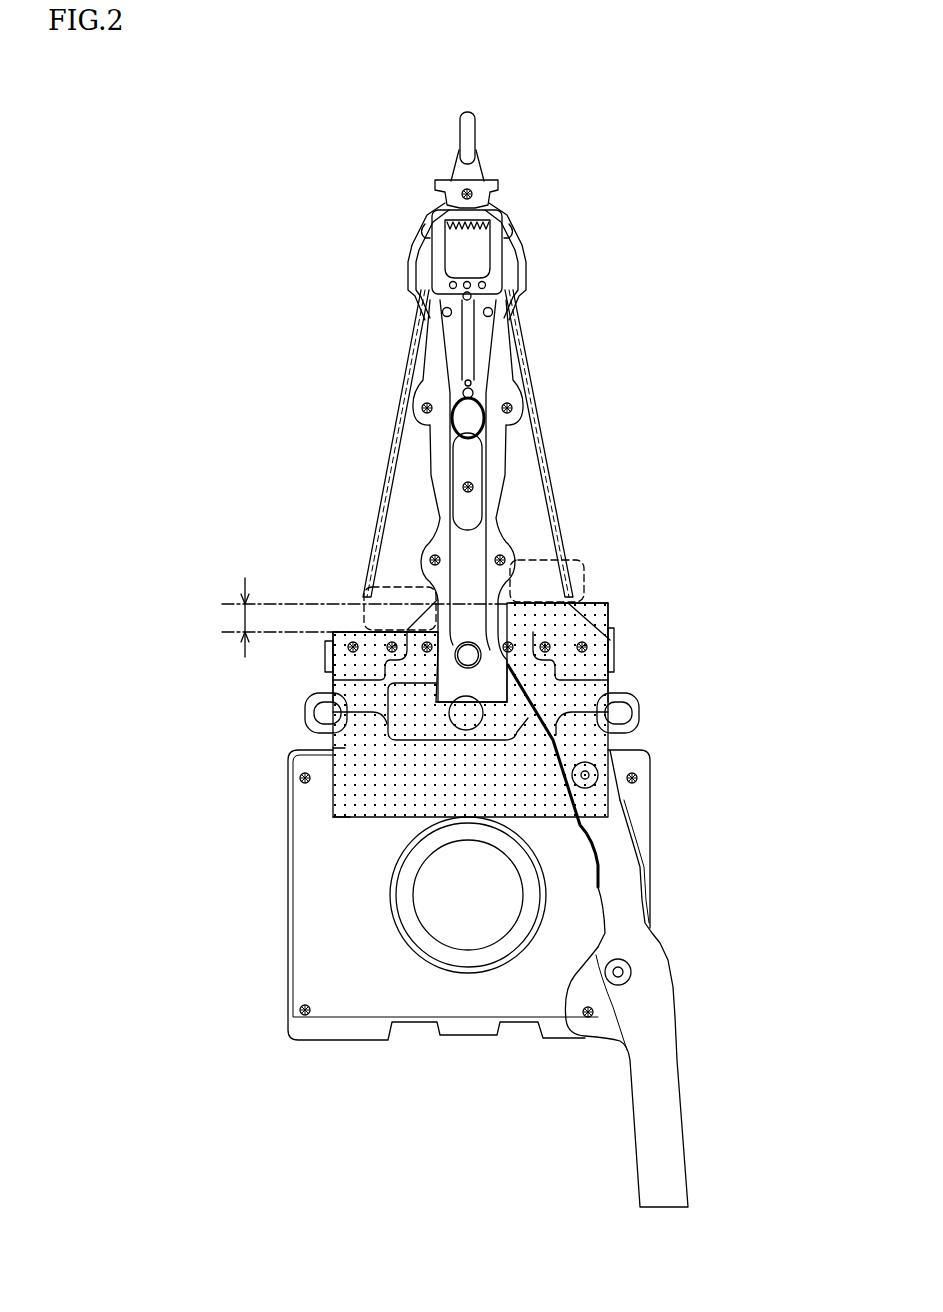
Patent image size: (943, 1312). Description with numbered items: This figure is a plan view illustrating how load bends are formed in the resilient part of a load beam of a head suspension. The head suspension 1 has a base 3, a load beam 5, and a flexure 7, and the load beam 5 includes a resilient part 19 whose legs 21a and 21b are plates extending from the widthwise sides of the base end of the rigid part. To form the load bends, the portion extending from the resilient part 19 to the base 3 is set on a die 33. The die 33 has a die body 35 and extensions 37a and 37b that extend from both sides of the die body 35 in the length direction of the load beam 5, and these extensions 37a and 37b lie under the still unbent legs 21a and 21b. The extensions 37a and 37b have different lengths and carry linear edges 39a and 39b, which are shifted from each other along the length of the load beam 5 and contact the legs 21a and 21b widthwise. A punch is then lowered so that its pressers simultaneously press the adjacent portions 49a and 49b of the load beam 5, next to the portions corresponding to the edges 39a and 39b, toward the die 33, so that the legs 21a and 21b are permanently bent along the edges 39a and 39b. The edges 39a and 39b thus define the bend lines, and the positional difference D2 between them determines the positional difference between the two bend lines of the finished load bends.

The head suspension 1 is at (636, 202).
The base 3 is at (286, 922).
The load beam 5 is at (558, 486).
The flexure 7 is at (516, 406).
The resilient part 19 is at (614, 637).
The leg 21a is at (325, 660).
The leg 21b is at (600, 622).
The die 33 is at (333, 752).
The die body 35 is at (335, 818).
The extension 37a is at (372, 698).
The extension 37b is at (614, 657).
The edge 39a is at (360, 632).
The edge 39b is at (600, 603).
The adjacent portion 49a is at (395, 585).
The adjacent portion 49b is at (580, 560).
The positional difference D2 is at (356, 617).